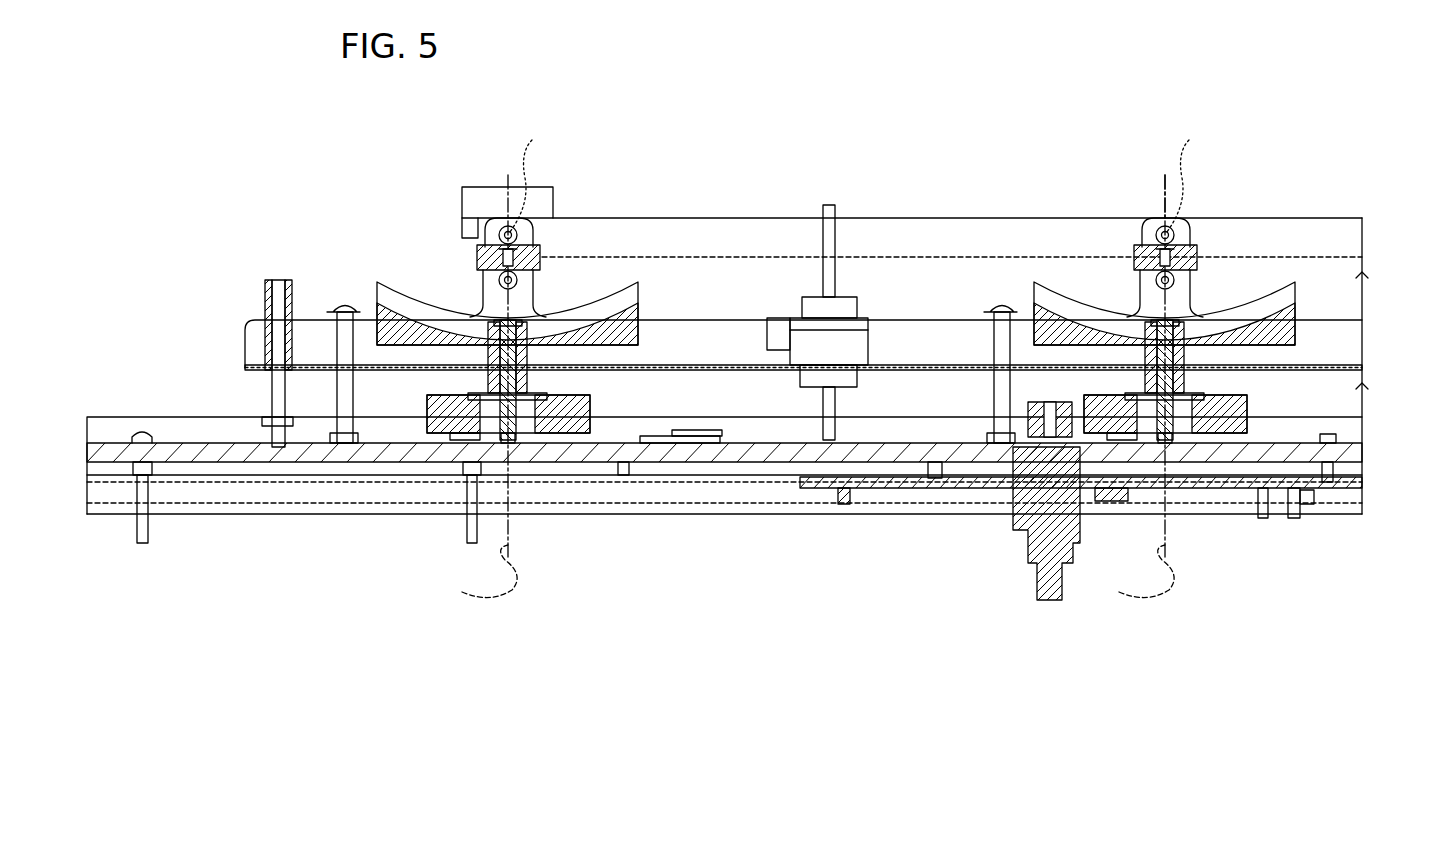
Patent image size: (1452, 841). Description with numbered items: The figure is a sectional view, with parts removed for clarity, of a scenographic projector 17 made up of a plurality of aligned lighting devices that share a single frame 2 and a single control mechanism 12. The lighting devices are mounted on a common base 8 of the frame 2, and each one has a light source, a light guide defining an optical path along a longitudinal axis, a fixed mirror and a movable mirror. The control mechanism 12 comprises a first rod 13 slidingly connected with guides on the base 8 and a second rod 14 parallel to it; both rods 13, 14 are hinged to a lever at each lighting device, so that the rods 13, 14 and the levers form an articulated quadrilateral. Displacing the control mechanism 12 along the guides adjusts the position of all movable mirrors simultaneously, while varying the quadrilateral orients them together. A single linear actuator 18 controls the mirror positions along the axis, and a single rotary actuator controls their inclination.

The frame 2 is at (1382, 468).
The base 8 is at (700, 447).
The control mechanism 12 is at (1374, 330).
The rod 13 is at (1355, 350).
The rod 14 is at (1352, 232).
The scenographic projector 17 is at (1328, 125).
The linear actuator 18 is at (860, 290).